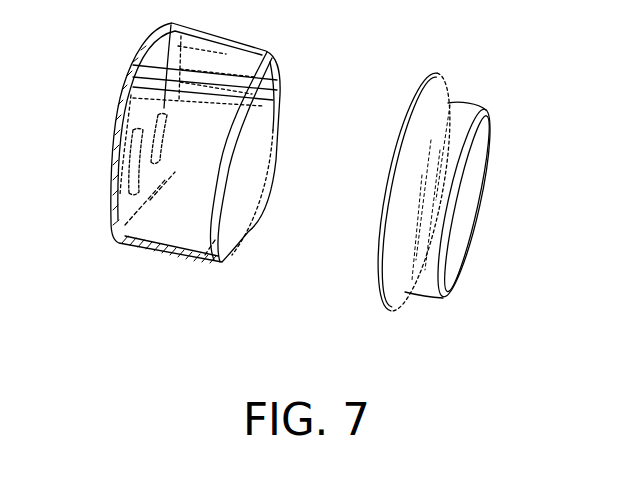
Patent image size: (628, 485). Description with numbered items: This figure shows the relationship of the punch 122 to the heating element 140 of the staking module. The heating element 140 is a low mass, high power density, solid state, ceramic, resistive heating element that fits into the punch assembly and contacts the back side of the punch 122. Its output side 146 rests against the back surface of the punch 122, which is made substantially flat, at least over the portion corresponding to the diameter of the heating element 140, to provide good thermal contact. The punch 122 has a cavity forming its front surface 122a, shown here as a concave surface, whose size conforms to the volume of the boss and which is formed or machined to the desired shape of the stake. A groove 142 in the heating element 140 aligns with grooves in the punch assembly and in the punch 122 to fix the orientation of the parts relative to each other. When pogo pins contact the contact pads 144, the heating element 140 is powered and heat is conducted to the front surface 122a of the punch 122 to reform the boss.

The punch 122 is at (492, 74).
The front surface 122a is at (460, 242).
The heating element 140 is at (177, 228).
The groove 142 is at (275, 80).
The contact pads 144 is at (150, 137).
The output side 146 is at (243, 173).